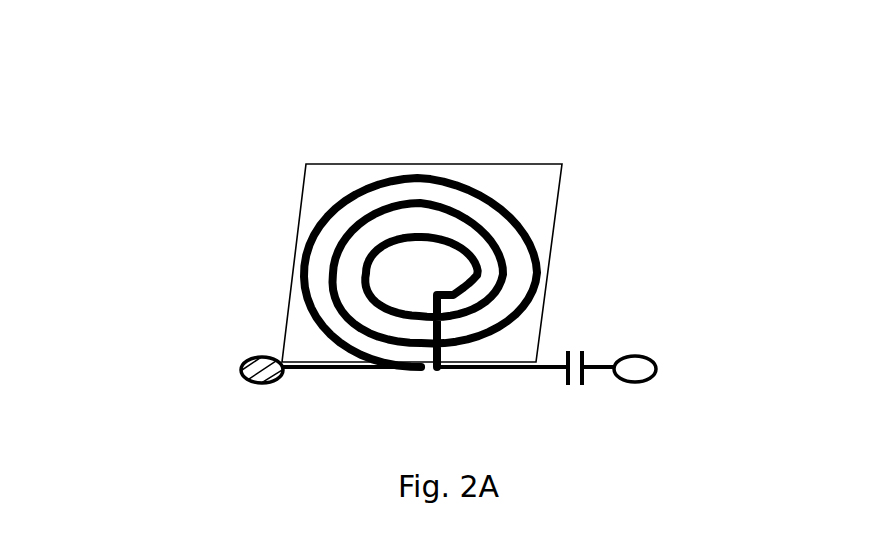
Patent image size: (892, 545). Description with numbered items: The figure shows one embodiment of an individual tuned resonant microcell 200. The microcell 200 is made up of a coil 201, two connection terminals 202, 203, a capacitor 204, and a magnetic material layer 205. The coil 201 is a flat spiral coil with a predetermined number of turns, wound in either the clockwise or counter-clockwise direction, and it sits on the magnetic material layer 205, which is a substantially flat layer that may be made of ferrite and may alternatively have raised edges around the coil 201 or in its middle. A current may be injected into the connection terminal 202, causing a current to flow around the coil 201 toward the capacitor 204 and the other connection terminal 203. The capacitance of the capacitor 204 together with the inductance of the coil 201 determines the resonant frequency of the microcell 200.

The tuned resonant microcell 200 is at (245, 100).
The coil 201 is at (407, 176).
The connection terminal 202 is at (263, 358).
The connection terminal 203 is at (632, 370).
The capacitor 204 is at (582, 351).
The magnetic material layer 205 is at (562, 176).